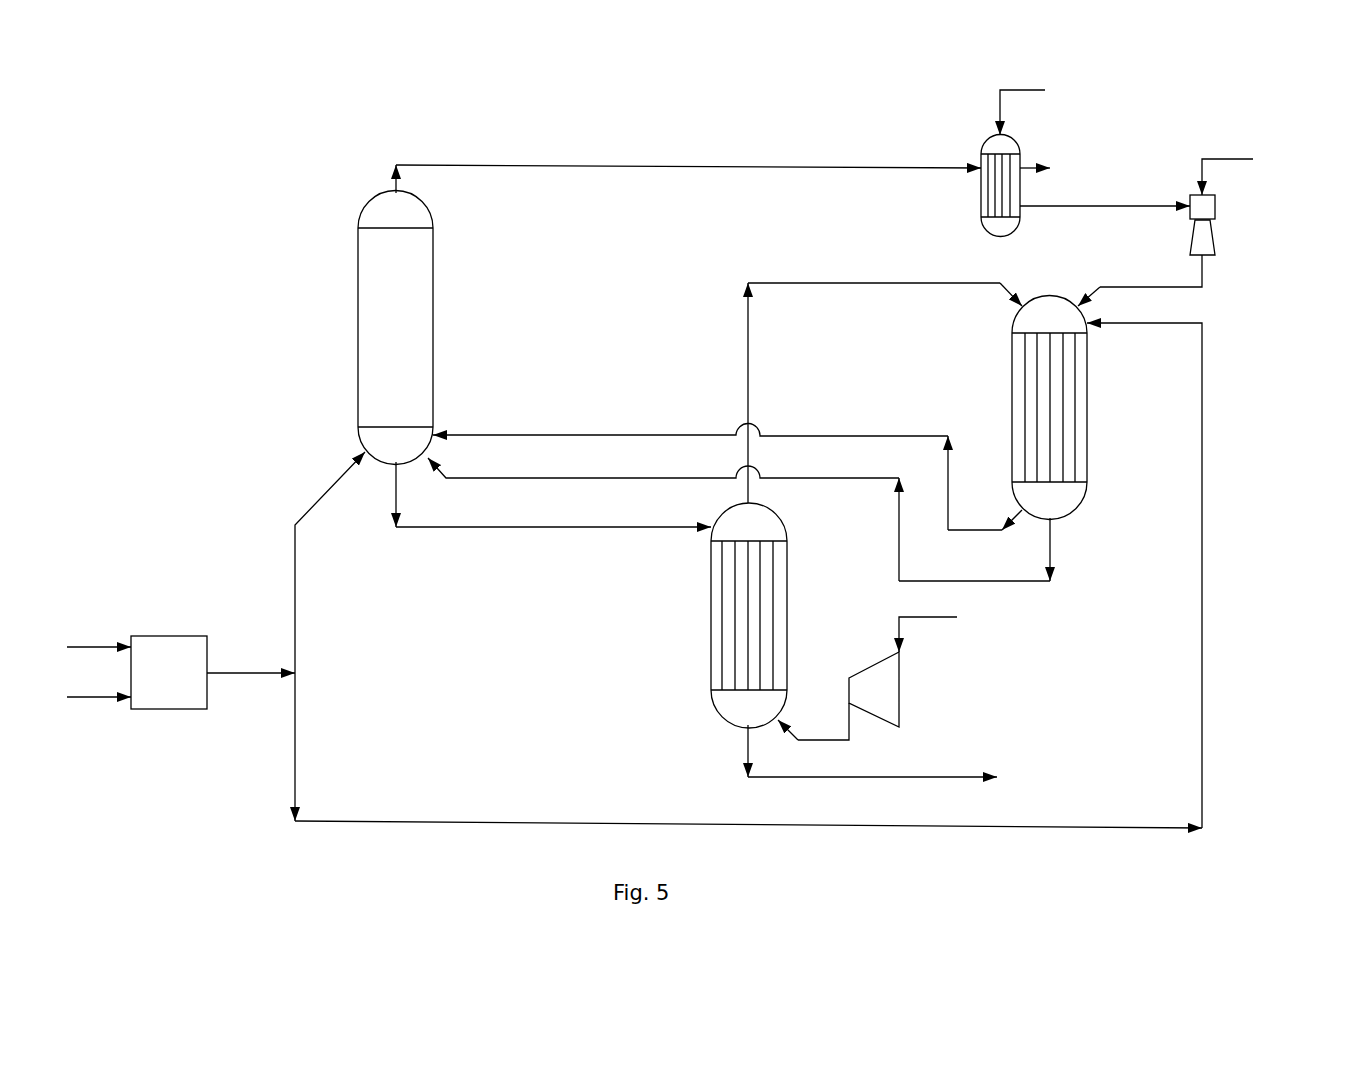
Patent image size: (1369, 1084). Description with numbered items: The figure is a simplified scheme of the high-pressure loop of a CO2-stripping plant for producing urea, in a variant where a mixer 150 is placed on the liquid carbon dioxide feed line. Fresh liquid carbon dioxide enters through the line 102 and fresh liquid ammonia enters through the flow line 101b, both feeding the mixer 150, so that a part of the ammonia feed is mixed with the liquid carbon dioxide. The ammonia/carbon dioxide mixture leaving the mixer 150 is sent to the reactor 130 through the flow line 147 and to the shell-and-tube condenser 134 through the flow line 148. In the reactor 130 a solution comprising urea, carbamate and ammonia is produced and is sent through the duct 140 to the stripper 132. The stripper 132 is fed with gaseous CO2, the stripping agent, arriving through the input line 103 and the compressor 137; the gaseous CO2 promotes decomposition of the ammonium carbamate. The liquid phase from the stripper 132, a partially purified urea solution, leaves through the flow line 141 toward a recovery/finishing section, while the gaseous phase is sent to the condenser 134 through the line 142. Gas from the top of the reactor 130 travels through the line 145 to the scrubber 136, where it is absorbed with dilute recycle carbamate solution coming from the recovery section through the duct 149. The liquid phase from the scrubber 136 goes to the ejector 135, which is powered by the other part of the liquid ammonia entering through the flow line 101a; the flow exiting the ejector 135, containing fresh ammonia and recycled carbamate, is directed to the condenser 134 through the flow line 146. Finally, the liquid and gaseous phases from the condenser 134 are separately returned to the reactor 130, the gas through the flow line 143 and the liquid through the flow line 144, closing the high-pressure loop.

The flow line 101a is at (1246, 159).
The flow line 101b is at (92, 646).
The line 102 is at (90, 700).
The input line 103 is at (952, 617).
The reactor 130 is at (368, 324).
The stripper 132 is at (782, 590).
The shell-and-tube condenser 134 is at (1083, 438).
The ejector 135 is at (1208, 208).
The scrubber 136 is at (983, 193).
The compressor 137 is at (898, 673).
The duct 140 is at (547, 528).
The flow line 141 is at (947, 777).
The line 142 is at (748, 329).
The flow line 143 is at (570, 435).
The flow line 144 is at (565, 478).
The line 145 is at (600, 165).
The flow line 146 is at (1205, 272).
The flow line 147 is at (294, 572).
The flow line 148 is at (544, 823).
The duct 149 is at (1045, 91).
The mixer 150 is at (184, 700).